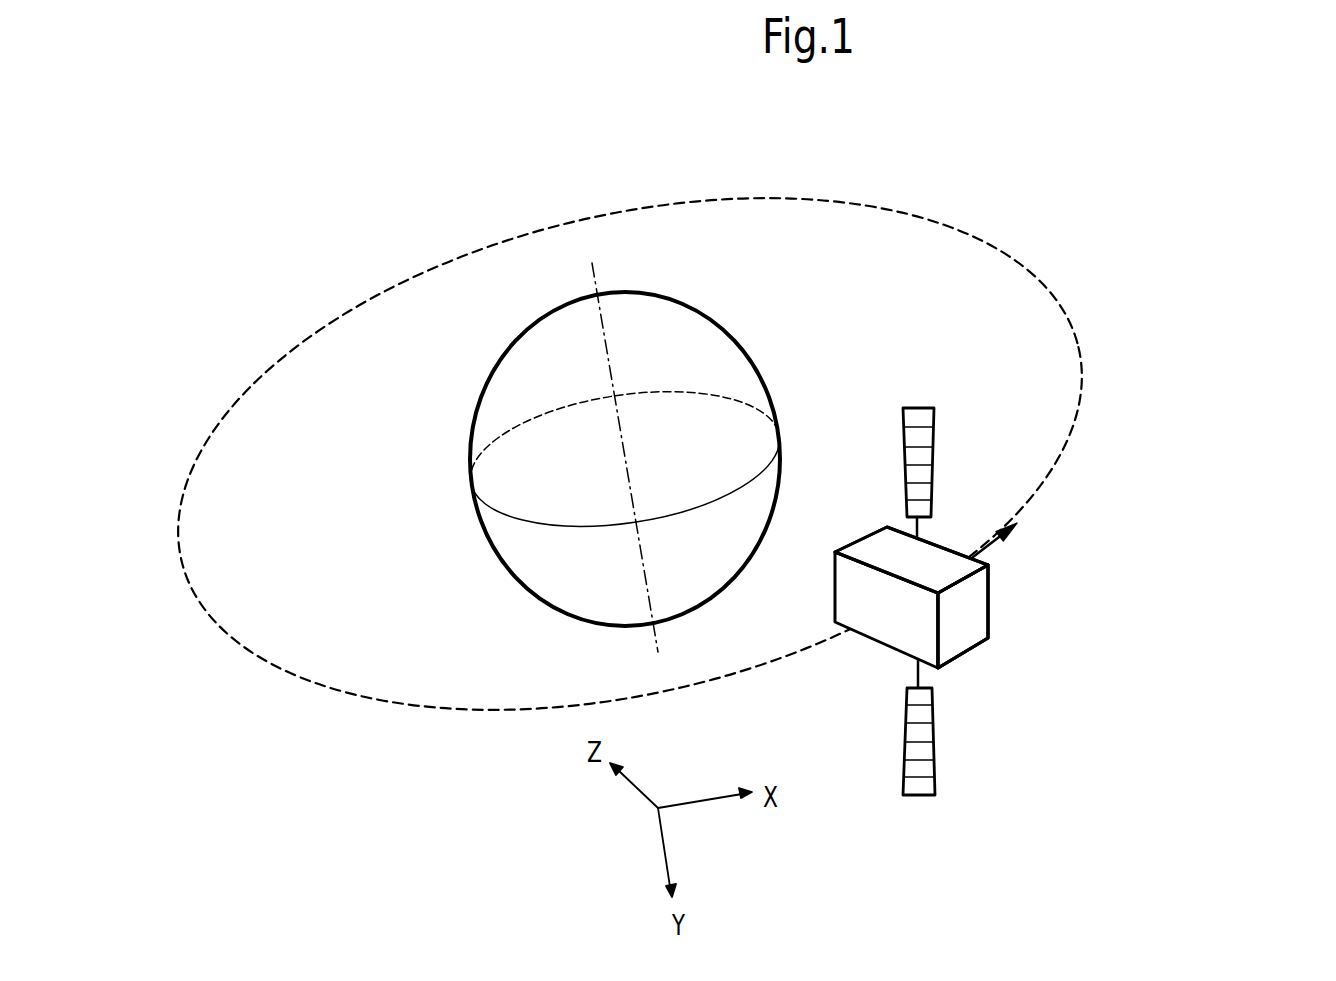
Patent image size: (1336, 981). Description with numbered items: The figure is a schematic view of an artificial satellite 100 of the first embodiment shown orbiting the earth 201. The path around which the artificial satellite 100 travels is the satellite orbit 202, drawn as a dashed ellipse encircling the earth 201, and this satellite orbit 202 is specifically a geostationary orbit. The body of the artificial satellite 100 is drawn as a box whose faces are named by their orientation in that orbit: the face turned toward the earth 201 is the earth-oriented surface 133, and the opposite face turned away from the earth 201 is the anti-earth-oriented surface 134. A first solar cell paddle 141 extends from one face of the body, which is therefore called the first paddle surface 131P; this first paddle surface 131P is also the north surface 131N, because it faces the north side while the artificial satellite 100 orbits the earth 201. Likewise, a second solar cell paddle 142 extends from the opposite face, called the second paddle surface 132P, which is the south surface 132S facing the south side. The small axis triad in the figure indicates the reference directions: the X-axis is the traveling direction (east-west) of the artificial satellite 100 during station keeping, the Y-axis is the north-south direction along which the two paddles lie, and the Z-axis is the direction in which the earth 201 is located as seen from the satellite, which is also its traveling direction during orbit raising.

The artificial satellite 100 is at (1025, 637).
The earth 201 is at (738, 345).
The satellite orbit 202 is at (893, 212).
The first paddle surface 131P is at (899, 563).
The north surface 131N is at (895, 537).
The second paddle surface 132P is at (973, 651).
The south surface 132S is at (993, 659).
The earth-oriented surface 133 is at (834, 580).
The anti-earth-oriented surface 134 is at (972, 612).
The first solar cell paddle 141 is at (915, 408).
The second solar cell paddle 142 is at (912, 797).